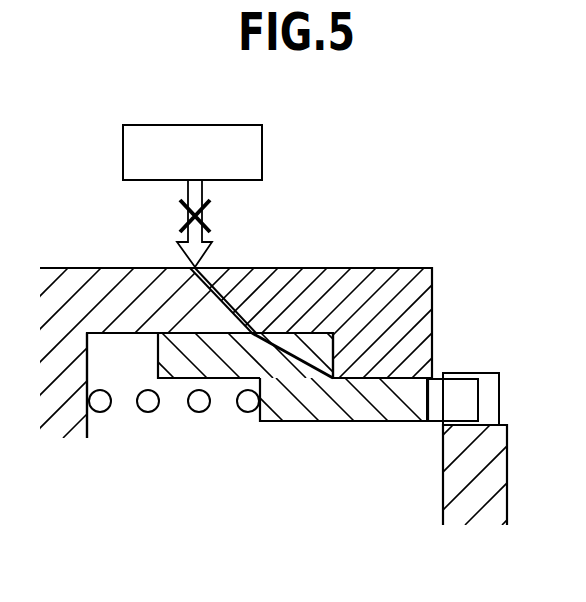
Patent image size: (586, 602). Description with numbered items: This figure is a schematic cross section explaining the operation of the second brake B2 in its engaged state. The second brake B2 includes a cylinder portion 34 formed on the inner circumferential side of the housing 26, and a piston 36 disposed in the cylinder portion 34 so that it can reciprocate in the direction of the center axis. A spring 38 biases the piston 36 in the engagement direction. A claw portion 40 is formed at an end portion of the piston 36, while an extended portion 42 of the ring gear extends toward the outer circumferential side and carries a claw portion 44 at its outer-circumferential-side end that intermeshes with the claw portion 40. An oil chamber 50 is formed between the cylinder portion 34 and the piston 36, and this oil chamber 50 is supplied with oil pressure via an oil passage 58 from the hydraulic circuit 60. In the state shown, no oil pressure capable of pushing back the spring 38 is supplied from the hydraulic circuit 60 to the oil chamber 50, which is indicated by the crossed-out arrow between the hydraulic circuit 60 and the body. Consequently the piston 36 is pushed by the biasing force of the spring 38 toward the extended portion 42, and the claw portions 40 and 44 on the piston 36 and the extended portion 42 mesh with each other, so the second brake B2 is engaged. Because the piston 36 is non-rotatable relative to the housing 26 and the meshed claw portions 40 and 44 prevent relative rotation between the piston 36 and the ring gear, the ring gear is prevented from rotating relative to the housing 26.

The housing 26 is at (405, 273).
The cylinder portion 34 is at (133, 334).
The piston 36 is at (295, 412).
The spring 38 is at (200, 407).
The claw portion 40 is at (436, 413).
The extended portion 42 is at (450, 487).
The claw portion 44 is at (488, 380).
The oil chamber 50 is at (300, 334).
The oil passage 58 is at (183, 268).
The hydraulic circuit 60 is at (147, 133).
The second brake B2 is at (253, 512).